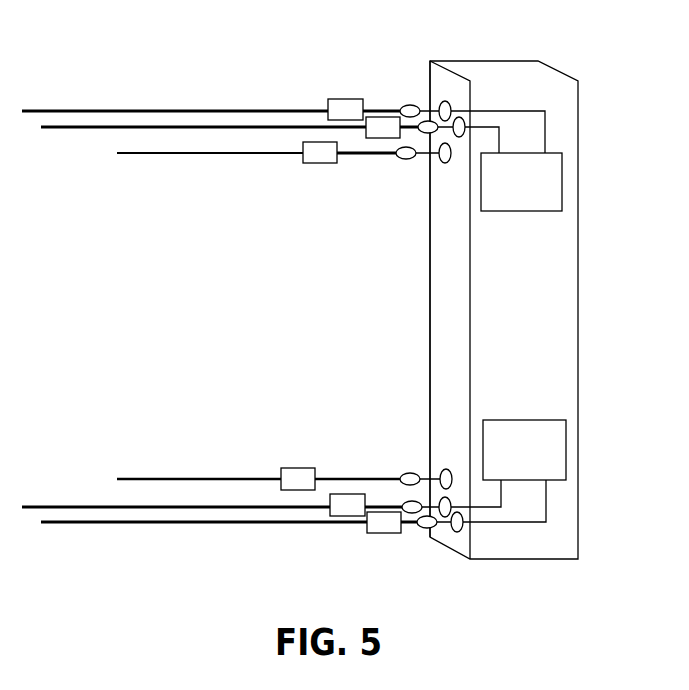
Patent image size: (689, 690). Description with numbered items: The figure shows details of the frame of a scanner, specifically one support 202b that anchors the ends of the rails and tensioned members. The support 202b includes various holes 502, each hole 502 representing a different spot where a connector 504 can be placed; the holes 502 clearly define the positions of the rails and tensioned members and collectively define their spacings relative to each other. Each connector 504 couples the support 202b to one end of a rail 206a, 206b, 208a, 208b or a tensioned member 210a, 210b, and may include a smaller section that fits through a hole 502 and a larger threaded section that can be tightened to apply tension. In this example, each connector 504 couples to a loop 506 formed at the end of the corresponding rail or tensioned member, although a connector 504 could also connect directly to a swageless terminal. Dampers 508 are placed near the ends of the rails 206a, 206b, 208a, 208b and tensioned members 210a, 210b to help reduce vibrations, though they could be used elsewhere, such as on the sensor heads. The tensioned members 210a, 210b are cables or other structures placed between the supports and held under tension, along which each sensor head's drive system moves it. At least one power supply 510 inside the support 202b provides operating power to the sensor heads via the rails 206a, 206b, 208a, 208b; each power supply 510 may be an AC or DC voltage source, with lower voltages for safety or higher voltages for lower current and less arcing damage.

The support 202b is at (520, 60).
The rail 206a is at (152, 108).
The rail 206b is at (82, 129).
The rail 208a is at (148, 523).
The rail 208b is at (60, 505).
The tensioned member 210a is at (220, 155).
The tensioned member 210b is at (188, 477).
The hole 502 is at (443, 165).
The connector 504 is at (425, 475).
The loop 506 is at (410, 105).
The damper 508 is at (345, 494).
The power supply 510 is at (562, 178).